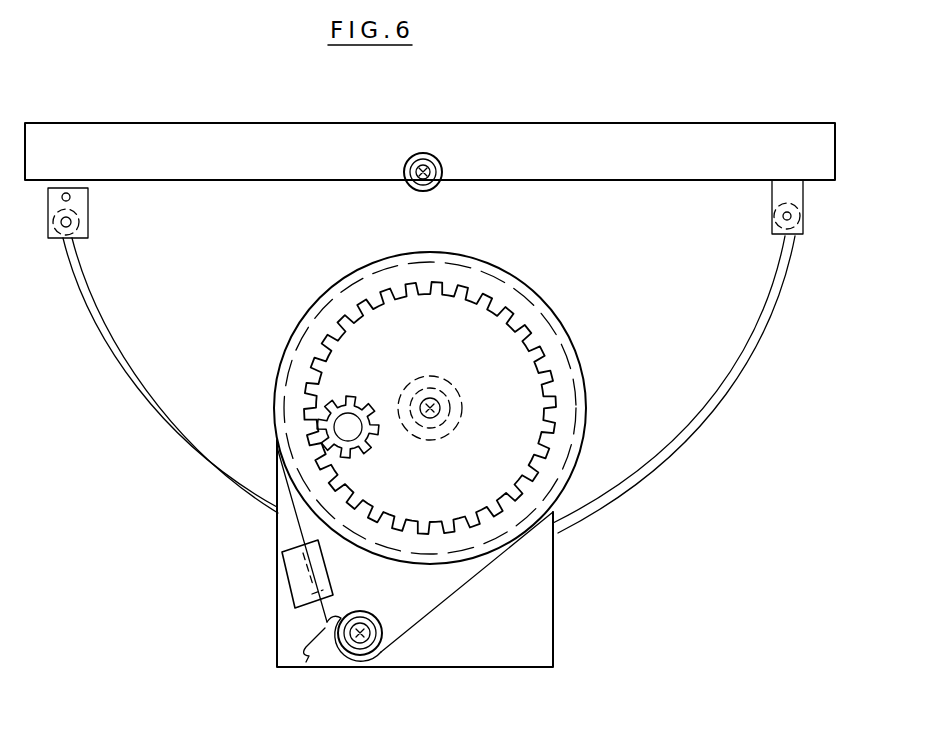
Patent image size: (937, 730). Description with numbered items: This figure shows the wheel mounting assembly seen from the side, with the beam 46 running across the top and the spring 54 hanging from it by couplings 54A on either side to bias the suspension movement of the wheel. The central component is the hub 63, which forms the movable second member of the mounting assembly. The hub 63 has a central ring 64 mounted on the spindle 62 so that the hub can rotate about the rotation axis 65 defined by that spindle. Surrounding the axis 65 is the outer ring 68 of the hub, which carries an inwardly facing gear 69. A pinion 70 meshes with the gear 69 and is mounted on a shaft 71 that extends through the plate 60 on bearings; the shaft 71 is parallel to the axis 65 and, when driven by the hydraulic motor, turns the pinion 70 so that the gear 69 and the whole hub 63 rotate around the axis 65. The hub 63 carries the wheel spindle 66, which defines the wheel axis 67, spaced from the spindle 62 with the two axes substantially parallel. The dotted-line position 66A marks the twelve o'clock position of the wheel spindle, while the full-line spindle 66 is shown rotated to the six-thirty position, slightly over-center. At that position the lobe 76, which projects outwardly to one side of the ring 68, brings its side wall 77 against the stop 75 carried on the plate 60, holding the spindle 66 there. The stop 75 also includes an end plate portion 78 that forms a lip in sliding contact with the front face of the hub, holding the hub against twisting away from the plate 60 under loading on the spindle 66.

The beam 46 is at (690, 123).
The spindle in raised position 66A is at (440, 160).
The couplings 54A is at (803, 216).
The spring 54 is at (776, 296).
The hub 63 is at (575, 343).
The outer ring 68 is at (503, 288).
The inwardly facing gear 69 is at (363, 302).
The central ring 64 is at (452, 390).
The spindle 62 is at (457, 406).
The rotation axis 65 is at (430, 400).
The pinion 70 is at (343, 412).
The shaft 71 is at (353, 445).
The plate 60 is at (533, 608).
The side wall 77 is at (292, 521).
The stop 75 is at (290, 565).
The end plate portion 78 is at (295, 597).
The spindle 66 is at (306, 662).
The wheel axis 67 is at (362, 636).
The lobe 76 is at (407, 632).